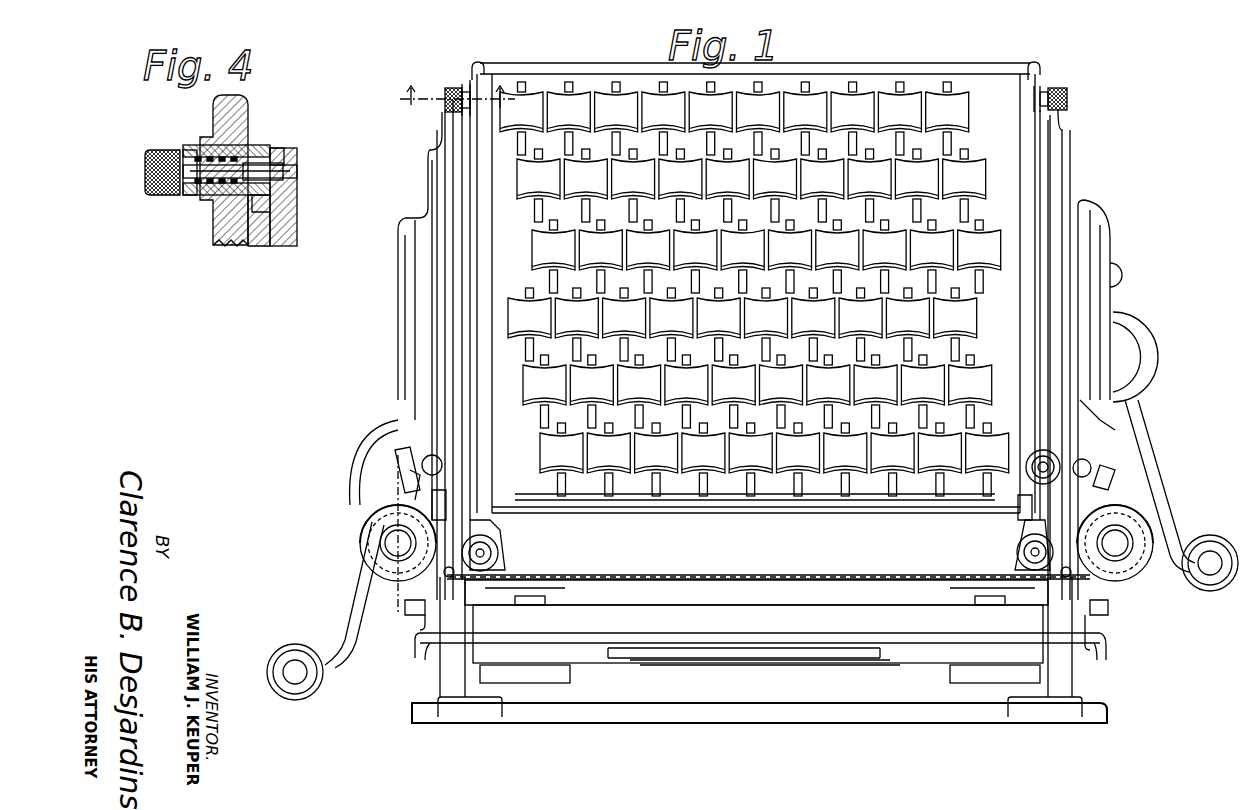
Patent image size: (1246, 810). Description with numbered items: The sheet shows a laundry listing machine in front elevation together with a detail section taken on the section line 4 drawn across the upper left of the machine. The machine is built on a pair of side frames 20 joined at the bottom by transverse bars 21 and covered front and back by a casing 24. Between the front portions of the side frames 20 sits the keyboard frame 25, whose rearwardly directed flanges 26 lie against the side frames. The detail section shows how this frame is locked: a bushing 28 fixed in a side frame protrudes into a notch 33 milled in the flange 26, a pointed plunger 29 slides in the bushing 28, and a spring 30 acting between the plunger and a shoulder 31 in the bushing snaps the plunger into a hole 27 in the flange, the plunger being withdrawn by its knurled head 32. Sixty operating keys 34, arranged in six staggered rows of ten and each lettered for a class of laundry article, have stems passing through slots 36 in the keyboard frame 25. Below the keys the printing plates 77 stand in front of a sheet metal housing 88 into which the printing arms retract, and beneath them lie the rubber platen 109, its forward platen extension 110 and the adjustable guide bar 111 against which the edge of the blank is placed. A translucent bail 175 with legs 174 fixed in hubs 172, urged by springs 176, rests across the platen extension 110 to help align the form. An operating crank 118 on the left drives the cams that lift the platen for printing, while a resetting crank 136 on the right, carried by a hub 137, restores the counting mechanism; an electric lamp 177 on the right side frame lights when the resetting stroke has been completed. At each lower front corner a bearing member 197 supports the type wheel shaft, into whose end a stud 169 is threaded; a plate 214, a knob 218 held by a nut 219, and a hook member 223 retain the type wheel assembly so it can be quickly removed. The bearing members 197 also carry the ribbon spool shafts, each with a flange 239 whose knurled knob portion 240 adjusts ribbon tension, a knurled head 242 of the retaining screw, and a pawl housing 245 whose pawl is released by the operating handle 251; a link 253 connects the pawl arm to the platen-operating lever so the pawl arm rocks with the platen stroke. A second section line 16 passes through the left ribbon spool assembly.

In FIG. 1, the section line 4 is at (458, 99).
In FIG. 1, the axis of knob 16 is at (398, 458).
In FIG. 4, the side frames 20 is at (225, 115).
In FIG. 1, the side frames 20 is at (478, 168).
In FIG. 1, the transverse bars 21 is at (722, 712).
In FIG. 1, the casing 24 is at (858, 73).
In FIG. 1, the keyboard frame 25 is at (1010, 186).
In FIG. 4, the rearwardly directed flanges 26 is at (285, 232).
In FIG. 4, the hole 27 is at (296, 170).
In FIG. 4, the bushing 28 is at (240, 140).
In FIG. 1, the bushing 28 is at (466, 88).
In FIG. 4, the plunger 29 is at (280, 148).
In FIG. 4, the spring 30 is at (215, 196).
In FIG. 4, the shoulder 31 is at (190, 197).
In FIG. 4, the knurled head 32 is at (168, 152).
In FIG. 1, the knurled head 32 is at (450, 112).
In FIG. 4, the notch 33 is at (270, 208).
In FIG. 1, the operating keys 34 is at (645, 85).
In FIG. 1, the slots 36 is at (570, 85).
In FIG. 1, the printing plate 77 is at (700, 575).
In FIG. 1, the housing 88 is at (938, 580).
In FIG. 1, the platen 109 is at (750, 620).
In FIG. 1, the platen extension 110 is at (834, 655).
In FIG. 1, the bar 111 is at (784, 650).
In FIG. 1, the operating crank 118 is at (342, 608).
In FIG. 1, the resetting crank 136 is at (1142, 430).
In FIG. 1, the hub 137 is at (1130, 327).
In FIG. 1, the stud 169 is at (445, 466).
In FIG. 1, the hubs 172 is at (418, 612).
In FIG. 1, the legs 174 is at (428, 632).
In FIG. 1, the bail 175 is at (680, 640).
In FIG. 1, the springs 176 is at (452, 616).
In FIG. 1, the electric lamp 177 is at (1050, 465).
In FIG. 1, the bearing member 197 is at (425, 490).
In FIG. 1, the plate 214 is at (510, 527).
In FIG. 1, the knob 218 is at (505, 572).
In FIG. 1, the nut 219 is at (500, 553).
In FIG. 1, the hook member 223 is at (448, 505).
In FIG. 1, the flange 239 is at (370, 566).
In FIG. 1, the knob portion 240 is at (370, 532).
In FIG. 1, the knurled head 242 is at (1128, 552).
In FIG. 1, the housing 245 is at (400, 492).
In FIG. 1, the operating handle 251 is at (410, 455).
In FIG. 1, the link 253 is at (540, 598).